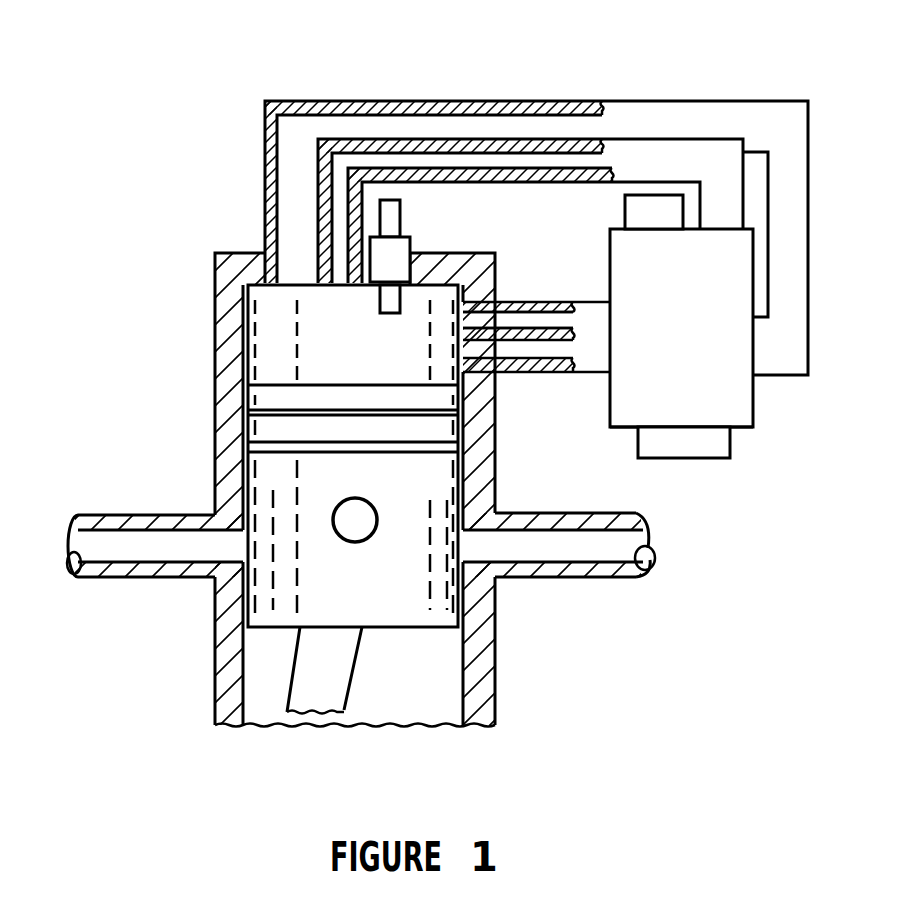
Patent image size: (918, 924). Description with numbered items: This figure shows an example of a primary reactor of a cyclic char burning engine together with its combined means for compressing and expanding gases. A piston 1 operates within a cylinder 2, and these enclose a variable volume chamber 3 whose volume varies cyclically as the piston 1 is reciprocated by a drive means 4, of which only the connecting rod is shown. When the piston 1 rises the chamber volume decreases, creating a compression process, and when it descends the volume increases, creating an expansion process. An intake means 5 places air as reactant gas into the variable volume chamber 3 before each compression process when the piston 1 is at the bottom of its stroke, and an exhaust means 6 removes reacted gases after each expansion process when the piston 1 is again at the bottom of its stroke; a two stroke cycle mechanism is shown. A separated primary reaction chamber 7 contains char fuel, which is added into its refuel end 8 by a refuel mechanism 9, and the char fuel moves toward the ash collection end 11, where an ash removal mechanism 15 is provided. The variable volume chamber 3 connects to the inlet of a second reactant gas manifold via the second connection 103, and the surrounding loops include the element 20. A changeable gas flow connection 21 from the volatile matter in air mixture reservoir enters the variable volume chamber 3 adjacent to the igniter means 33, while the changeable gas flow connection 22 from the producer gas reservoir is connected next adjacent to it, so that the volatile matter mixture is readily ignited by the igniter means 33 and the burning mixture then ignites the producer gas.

The piston 1 is at (293, 478).
The cylinder 2 is at (240, 367).
The variable volume chamber 3 is at (307, 323).
The drive means 4 is at (323, 682).
The intake means 5 is at (160, 543).
The exhaust means 6 is at (572, 538).
The primary reaction chamber 7 is at (712, 373).
The refuel end 8 is at (668, 262).
The refuel mechanism 9 is at (650, 214).
The ash collection end 11 is at (692, 420).
The ash removal mechanism 15 is at (683, 445).
The coil / winding 20 is at (412, 163).
The changeable gas flow connection 21 is at (507, 323).
The changeable gas flow connection 22 is at (520, 350).
The igniter means 33 is at (388, 263).
The second connection 103 is at (300, 157).